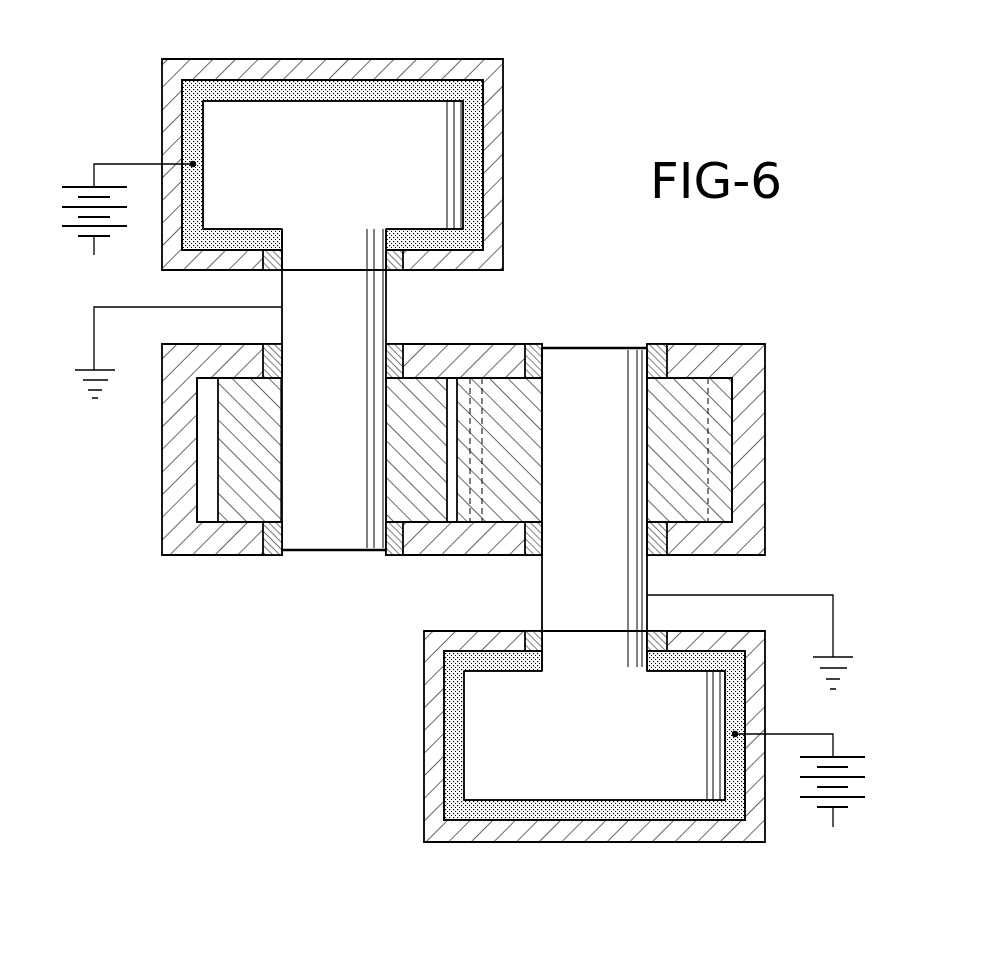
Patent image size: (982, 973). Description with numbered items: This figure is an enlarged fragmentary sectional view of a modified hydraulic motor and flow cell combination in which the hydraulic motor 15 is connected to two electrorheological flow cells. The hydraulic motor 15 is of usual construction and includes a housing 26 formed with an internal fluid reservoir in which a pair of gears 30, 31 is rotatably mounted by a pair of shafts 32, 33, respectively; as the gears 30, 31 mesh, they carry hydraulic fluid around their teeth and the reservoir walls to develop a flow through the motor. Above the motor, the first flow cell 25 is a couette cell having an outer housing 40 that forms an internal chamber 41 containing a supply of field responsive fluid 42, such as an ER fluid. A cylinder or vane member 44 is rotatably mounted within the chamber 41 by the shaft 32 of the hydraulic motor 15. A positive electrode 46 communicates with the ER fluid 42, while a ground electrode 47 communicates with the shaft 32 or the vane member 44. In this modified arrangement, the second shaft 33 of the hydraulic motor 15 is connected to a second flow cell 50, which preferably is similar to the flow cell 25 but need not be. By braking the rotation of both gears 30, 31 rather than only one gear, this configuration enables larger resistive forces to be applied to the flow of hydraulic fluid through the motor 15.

The hydraulic motor 15 is at (520, 481).
The flow cell 25 is at (389, 138).
The housing 26 is at (755, 462).
The gear 30 is at (505, 500).
The gear 31 is at (253, 497).
The shaft 32 is at (330, 535).
The shaft 33 is at (597, 377).
The outer housing 40 is at (497, 140).
The internal chamber 41 is at (488, 180).
The field responsive fluid 42 is at (345, 90).
The vane member 44 is at (273, 127).
The positive electrode 46 is at (122, 163).
The ground electrode 47 is at (94, 335).
The second flow cell 50 is at (424, 712).